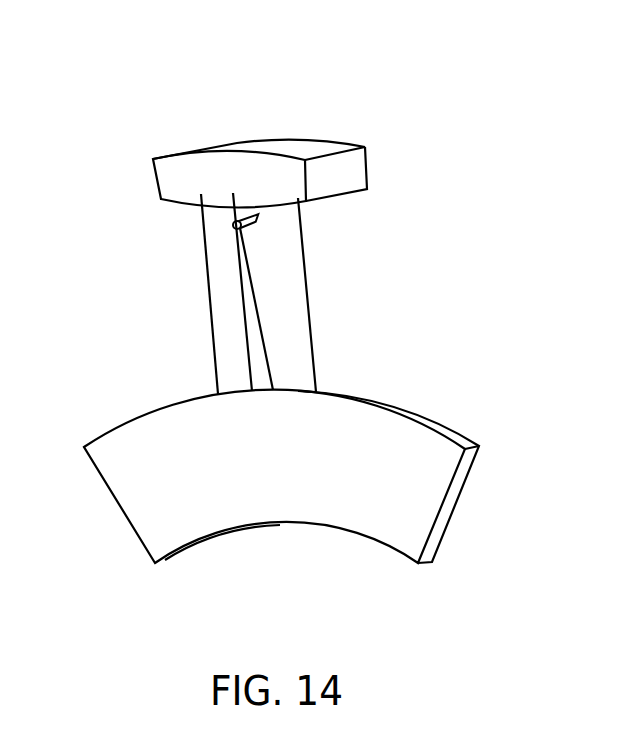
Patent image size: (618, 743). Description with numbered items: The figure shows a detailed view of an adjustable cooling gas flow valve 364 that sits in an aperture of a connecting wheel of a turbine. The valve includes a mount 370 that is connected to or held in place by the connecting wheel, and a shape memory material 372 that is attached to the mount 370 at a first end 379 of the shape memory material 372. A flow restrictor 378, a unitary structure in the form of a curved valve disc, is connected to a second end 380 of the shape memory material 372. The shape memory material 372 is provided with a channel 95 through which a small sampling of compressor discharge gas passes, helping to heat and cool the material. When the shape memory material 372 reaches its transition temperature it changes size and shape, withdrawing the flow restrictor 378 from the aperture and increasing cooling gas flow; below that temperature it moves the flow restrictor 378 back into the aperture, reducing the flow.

The adjustable gas flow valve 364 is at (411, 98).
The mount 370 is at (348, 173).
The shape memory material 372 is at (227, 318).
The first end 379 is at (282, 198).
The channel 95 is at (234, 225).
The flow restrictor 378 is at (427, 482).
The second end 380 is at (309, 386).